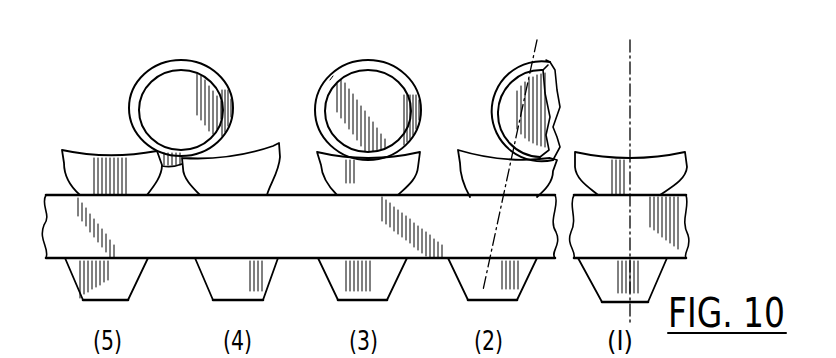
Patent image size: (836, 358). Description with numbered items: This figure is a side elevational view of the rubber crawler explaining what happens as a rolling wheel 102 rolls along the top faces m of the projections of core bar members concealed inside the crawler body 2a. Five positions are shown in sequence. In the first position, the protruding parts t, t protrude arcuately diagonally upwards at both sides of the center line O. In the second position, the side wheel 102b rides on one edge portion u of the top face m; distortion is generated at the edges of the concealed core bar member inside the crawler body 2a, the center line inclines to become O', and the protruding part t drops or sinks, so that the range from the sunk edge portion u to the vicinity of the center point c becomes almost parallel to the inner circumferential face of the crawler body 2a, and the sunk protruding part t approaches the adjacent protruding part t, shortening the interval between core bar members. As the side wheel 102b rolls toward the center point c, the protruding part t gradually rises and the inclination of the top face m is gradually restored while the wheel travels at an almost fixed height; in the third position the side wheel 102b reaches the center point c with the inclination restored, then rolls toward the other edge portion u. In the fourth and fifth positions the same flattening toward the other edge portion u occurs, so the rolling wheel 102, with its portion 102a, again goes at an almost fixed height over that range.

The crawler body 2a is at (62, 206).
The rolling wheel 102 is at (182, 80).
The outer surface of ring 102a is at (343, 75).
The side wheel 102b is at (547, 90).
The center line O is at (644, 168).
The inclined center line O' is at (520, 151).
The protruding part t is at (70, 153).
The top face m is at (102, 157).
The edge portion of the top face u is at (187, 154).
The center point of the top face c is at (230, 155).